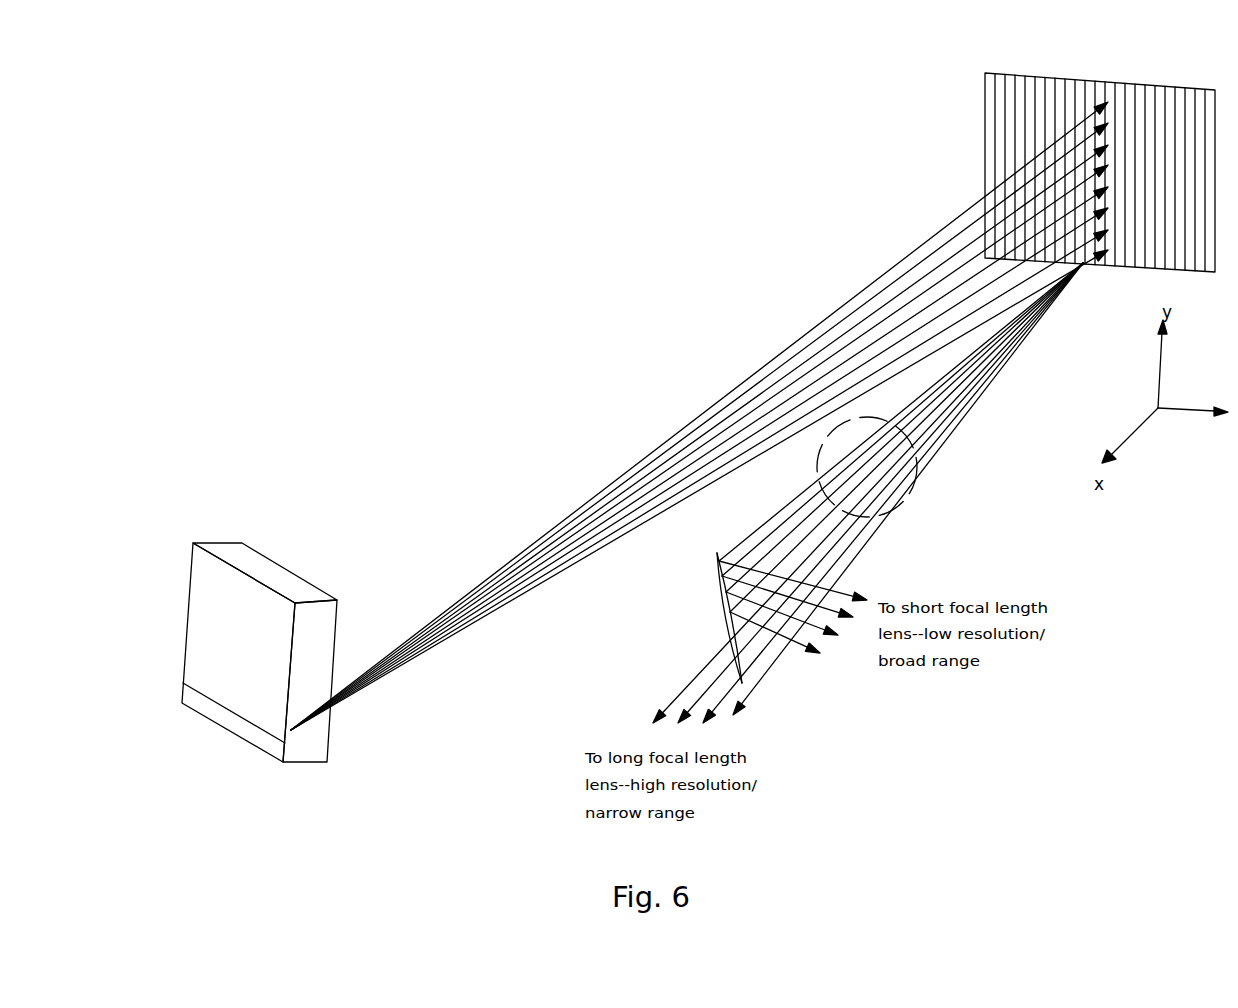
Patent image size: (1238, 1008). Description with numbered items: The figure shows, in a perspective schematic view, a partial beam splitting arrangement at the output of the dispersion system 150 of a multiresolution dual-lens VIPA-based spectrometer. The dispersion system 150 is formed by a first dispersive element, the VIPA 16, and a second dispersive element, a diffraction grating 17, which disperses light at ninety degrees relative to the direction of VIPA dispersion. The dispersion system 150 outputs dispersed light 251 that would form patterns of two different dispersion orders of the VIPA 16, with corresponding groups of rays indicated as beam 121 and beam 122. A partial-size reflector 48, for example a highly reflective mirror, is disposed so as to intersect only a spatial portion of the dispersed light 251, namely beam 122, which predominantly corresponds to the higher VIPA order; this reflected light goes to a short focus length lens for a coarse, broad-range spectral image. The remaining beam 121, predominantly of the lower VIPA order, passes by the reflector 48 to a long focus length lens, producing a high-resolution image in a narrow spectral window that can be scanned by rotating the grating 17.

The dispersive system 150 is at (401, 87).
The diffraction grating 17 is at (985, 127).
The VIPA 16 is at (217, 538).
The beam 122 is at (778, 473).
The beam 121 is at (929, 392).
The dispersed light 251 is at (917, 490).
The partial-size reflector 48 is at (727, 612).